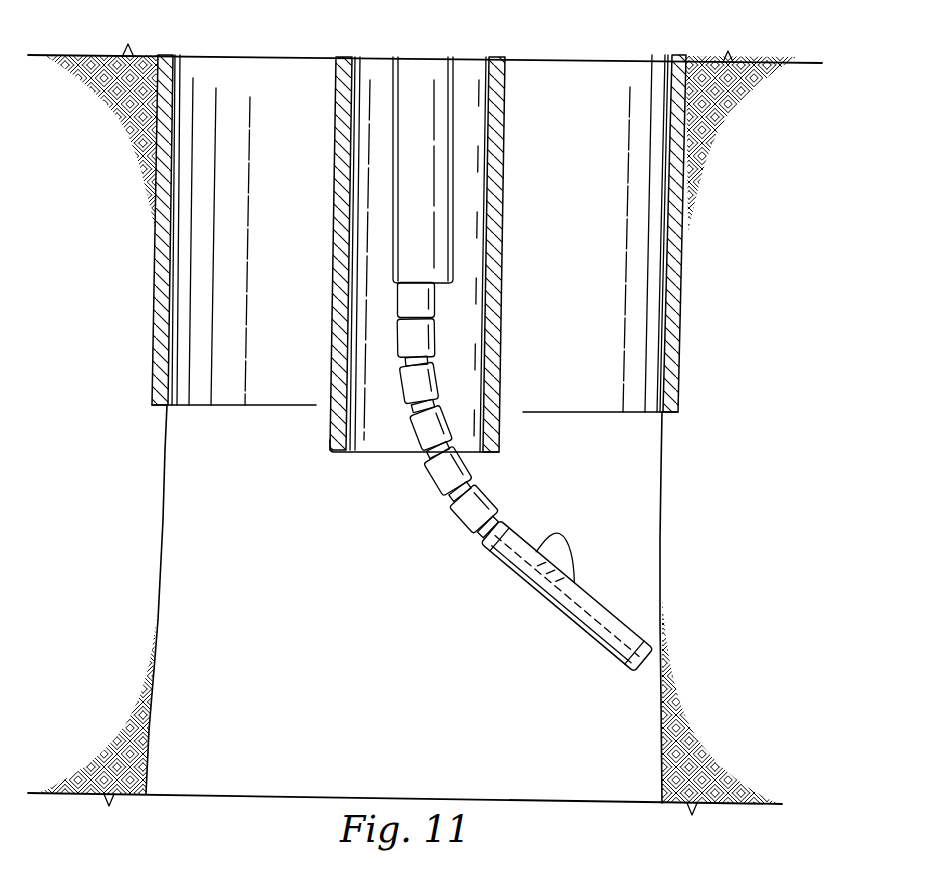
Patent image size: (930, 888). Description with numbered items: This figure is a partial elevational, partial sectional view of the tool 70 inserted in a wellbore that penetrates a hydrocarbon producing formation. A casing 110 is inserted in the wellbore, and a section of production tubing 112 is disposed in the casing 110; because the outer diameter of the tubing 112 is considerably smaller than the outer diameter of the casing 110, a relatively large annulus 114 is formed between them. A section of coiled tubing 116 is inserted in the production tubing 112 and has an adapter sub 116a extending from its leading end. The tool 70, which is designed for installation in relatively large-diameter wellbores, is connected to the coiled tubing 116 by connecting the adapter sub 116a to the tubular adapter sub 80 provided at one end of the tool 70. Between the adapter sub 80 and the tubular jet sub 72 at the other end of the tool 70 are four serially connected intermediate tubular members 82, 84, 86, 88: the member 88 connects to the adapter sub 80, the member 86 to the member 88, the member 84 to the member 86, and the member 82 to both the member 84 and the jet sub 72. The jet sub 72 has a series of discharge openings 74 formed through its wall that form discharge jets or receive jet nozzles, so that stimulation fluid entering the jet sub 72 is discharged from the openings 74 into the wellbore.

The tool 70 is at (597, 586).
The tubular jet sub 72 is at (693, 693).
The discharge openings 74 is at (578, 662).
The tubular adapter sub 80 is at (437, 336).
The intermediate tubular member 82 is at (462, 522).
The intermediate tubular member 84 is at (433, 478).
The intermediate tubular member 86 is at (410, 426).
The intermediate tubular member 88 is at (401, 385).
The casing 110 is at (177, 68).
The production tubing 112 is at (508, 179).
The annulus 114 is at (592, 256).
The coiled tubing 116 is at (450, 74).
The adapter sub 116a is at (397, 297).